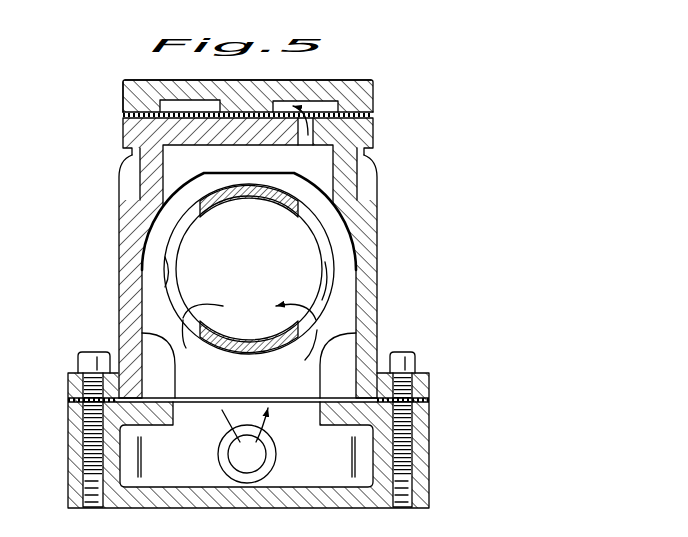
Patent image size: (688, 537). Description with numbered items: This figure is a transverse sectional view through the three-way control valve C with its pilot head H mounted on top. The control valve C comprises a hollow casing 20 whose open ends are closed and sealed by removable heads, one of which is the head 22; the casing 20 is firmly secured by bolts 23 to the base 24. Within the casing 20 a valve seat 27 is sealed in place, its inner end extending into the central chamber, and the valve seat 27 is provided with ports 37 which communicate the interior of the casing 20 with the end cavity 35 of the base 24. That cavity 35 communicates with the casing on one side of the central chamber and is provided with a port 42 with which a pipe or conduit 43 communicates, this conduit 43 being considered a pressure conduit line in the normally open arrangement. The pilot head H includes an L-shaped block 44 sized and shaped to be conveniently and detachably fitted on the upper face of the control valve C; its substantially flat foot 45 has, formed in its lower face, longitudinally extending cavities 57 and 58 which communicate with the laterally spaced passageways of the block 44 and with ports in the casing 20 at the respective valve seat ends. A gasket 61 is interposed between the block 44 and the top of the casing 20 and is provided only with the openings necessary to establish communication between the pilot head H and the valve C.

The hollow casing 20 is at (373, 215).
The control valve C is at (126, 228).
The block 44 is at (140, 78).
The foot 45 is at (200, 66).
The pilot head H is at (123, 96).
The cavity 57 is at (208, 100).
The cavity 58 is at (323, 103).
The gasket 61 is at (373, 116).
The ports 37 is at (168, 268).
The removable head 22 is at (287, 262).
The valve seat 27 is at (242, 356).
The base 24 is at (68, 425).
The end cavity 35 is at (173, 480).
The port 42 is at (271, 446).
The pipe or conduit 43 is at (270, 465).
The bolts 23 is at (88, 350).